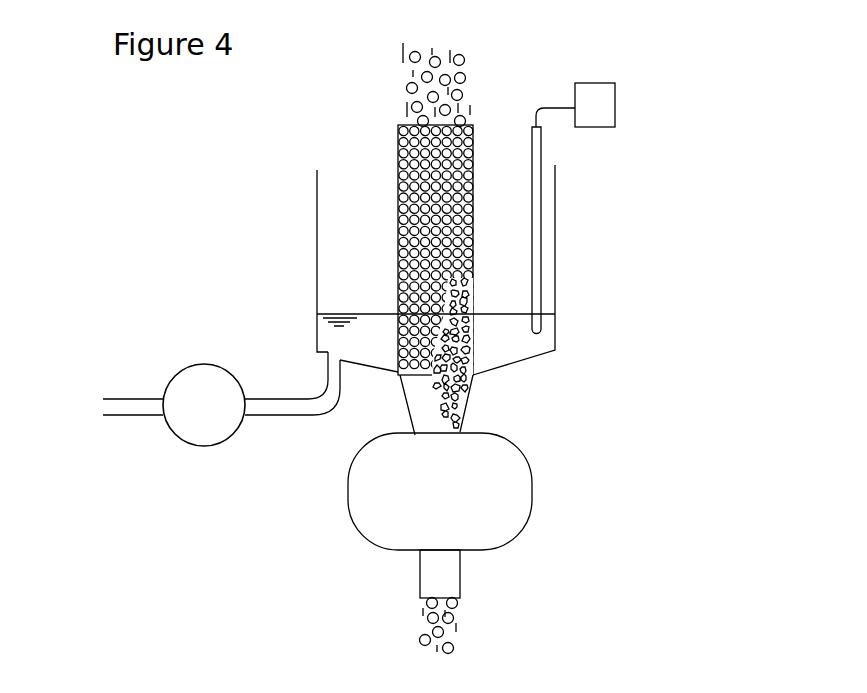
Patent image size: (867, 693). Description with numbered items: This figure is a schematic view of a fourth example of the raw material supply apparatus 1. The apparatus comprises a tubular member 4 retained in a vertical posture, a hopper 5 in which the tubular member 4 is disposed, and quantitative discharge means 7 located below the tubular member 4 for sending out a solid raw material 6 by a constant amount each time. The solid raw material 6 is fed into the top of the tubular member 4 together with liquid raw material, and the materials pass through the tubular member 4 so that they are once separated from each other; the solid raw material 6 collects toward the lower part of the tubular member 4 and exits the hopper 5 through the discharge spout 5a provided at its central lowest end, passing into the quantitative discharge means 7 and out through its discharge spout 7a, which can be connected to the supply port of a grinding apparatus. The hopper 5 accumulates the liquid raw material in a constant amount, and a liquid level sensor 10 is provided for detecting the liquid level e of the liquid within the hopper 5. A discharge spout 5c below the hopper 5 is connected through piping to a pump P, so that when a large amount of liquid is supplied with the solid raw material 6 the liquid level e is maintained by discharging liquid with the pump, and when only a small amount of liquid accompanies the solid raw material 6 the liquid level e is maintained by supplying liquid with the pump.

The raw material supply apparatus 1 is at (556, 233).
The tubular member 4 is at (474, 180).
The hopper 5 is at (317, 220).
The discharge spout 5a is at (472, 400).
The discharge spout 5c is at (316, 383).
The solid raw material 6 is at (457, 280).
The quantitative discharge means 7 is at (348, 497).
The discharge spout 7a is at (460, 572).
The liquid level sensor 10 is at (600, 83).
The liquid level e is at (367, 313).